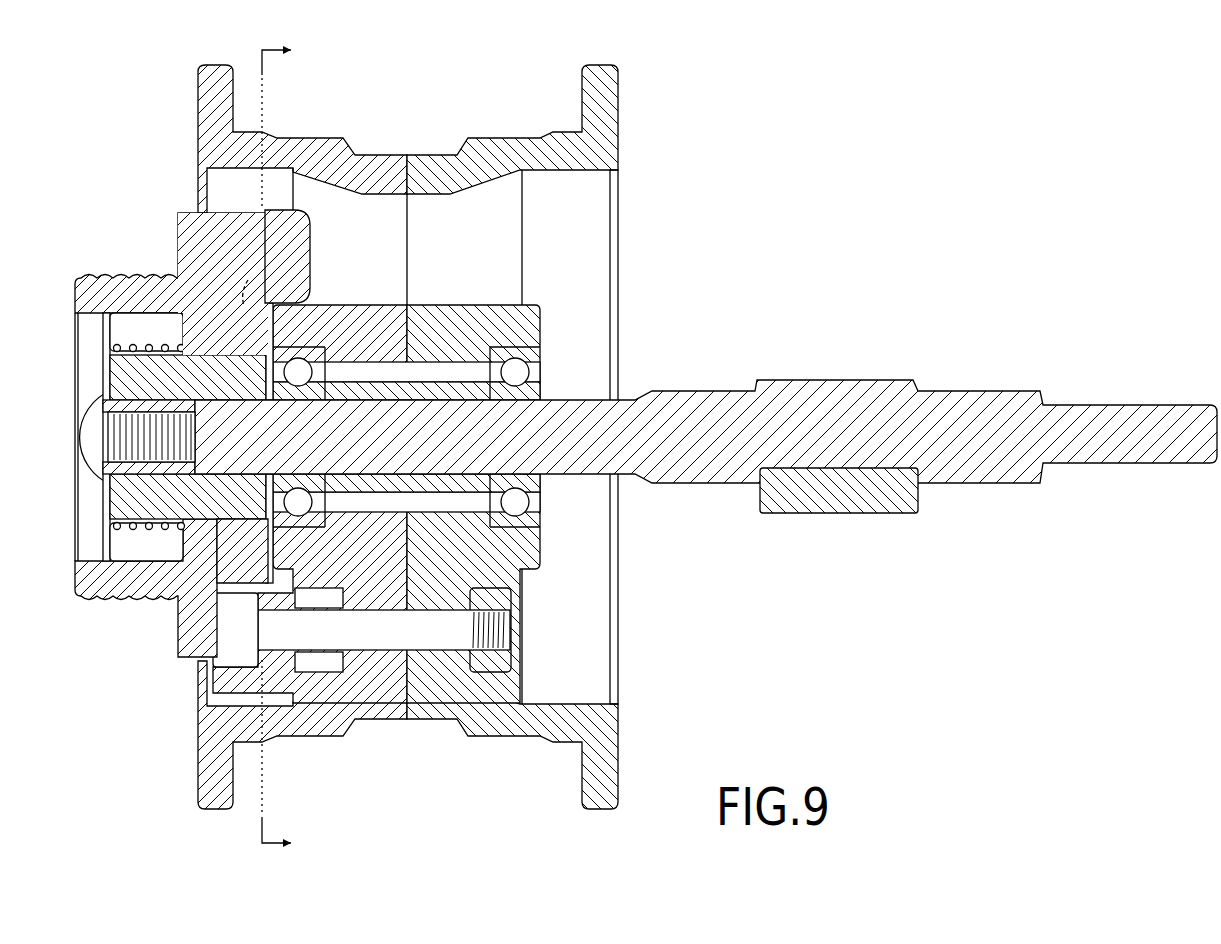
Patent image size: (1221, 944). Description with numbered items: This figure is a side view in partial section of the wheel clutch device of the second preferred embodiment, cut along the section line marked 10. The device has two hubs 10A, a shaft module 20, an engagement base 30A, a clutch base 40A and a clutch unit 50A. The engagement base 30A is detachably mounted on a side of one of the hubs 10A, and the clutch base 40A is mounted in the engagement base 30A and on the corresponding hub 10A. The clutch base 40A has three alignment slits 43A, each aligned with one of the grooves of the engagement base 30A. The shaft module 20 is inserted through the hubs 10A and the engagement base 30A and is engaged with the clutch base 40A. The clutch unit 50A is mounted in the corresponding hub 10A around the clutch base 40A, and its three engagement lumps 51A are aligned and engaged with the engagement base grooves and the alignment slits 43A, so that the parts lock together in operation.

The section line 10- 10 is at (296, 446).
The hub 10A is at (383, 166).
The shaft module 20 is at (837, 350).
The engagement base 30A is at (314, 247).
The clutch base 40A is at (237, 574).
The alignment slit 43A is at (250, 276).
The clutch unit 50A is at (170, 248).
The engagement lump 51A is at (232, 247).